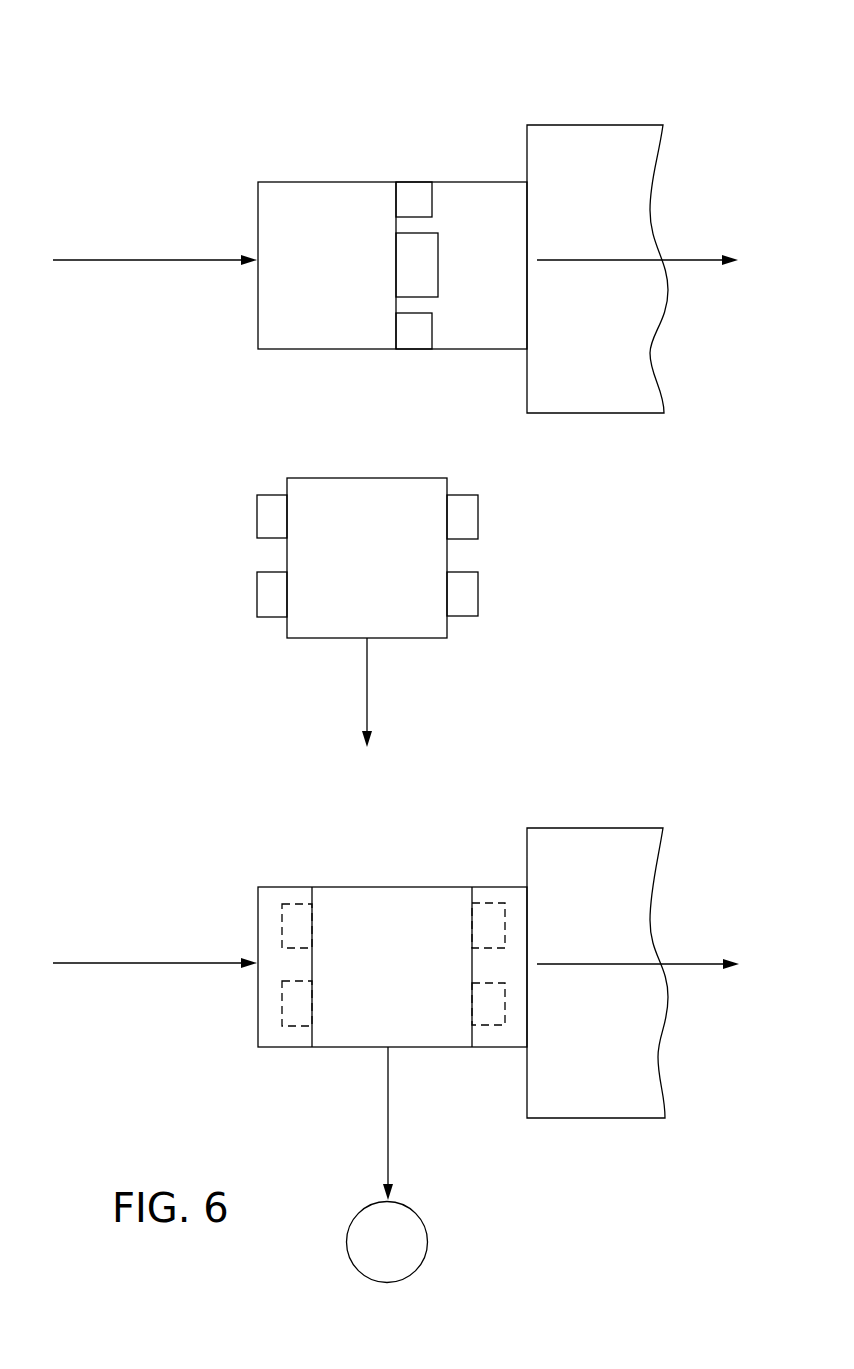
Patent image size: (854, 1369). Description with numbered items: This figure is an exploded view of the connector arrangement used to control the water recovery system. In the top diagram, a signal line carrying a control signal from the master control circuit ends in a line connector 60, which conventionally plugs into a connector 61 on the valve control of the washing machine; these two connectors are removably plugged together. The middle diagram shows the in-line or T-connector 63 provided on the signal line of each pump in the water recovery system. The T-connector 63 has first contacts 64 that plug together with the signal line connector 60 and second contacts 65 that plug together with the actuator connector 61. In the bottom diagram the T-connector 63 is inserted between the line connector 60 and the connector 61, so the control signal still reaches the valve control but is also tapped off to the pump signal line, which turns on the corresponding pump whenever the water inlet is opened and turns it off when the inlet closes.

The line connector 60 is at (312, 218).
The connector 61 is at (462, 200).
The in-line connector 63 is at (347, 500).
The first contacts 64 is at (272, 517).
The second contacts 65 is at (462, 517).